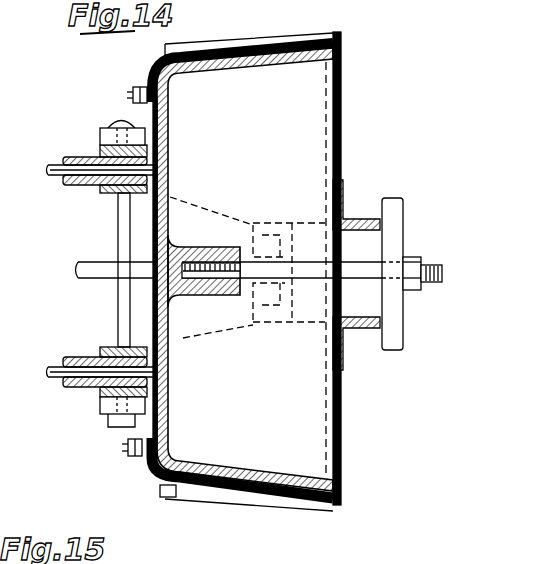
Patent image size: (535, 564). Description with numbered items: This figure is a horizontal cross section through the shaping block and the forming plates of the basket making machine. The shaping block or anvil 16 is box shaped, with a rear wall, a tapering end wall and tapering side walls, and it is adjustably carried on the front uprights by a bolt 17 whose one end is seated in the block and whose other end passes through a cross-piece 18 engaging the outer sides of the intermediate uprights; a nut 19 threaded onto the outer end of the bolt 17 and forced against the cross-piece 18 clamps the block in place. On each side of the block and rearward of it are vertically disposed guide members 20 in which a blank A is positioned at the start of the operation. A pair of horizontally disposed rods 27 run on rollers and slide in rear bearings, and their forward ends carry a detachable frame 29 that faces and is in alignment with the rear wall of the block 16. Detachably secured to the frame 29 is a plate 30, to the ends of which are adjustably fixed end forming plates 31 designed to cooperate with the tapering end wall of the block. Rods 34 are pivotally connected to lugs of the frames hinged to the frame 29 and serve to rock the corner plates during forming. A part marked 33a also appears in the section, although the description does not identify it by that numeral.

The shaping block or anvil 16 is at (175, 137).
The bolt 17 is at (437, 263).
The cross-piece 18 is at (396, 215).
The nut 19 is at (416, 292).
The guide members 20 is at (345, 192).
The rods 27 is at (72, 157).
The detachable frame 29 is at (133, 313).
The plate 30 is at (200, 378).
The end forming plates 31 is at (147, 71).
The strip 33a is at (175, 490).
The rods 34 is at (77, 270).
The blank A is at (322, 510).